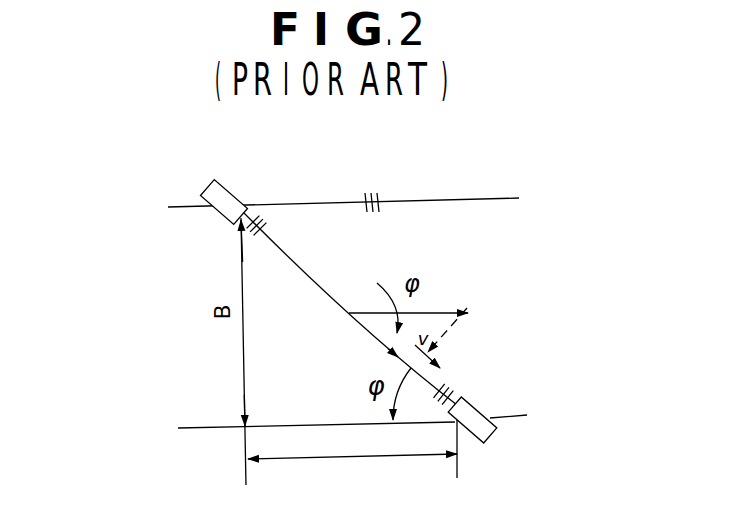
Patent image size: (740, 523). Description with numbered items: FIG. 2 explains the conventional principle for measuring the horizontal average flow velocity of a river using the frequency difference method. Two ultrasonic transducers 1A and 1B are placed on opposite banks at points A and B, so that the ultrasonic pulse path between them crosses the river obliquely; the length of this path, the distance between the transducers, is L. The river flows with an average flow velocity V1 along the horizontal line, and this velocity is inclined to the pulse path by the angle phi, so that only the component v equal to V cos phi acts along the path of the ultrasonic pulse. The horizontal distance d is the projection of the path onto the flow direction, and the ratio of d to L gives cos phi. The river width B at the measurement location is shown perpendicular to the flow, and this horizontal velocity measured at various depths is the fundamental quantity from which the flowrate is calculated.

The transducer 1A is at (205, 190).
The transducer 1B is at (507, 419).
The position A is at (230, 196).
The width of river B is at (540, 392).
The distance between transducers L is at (280, 244).
The average flow velocity V1 is at (424, 320).
The distance d is at (352, 444).